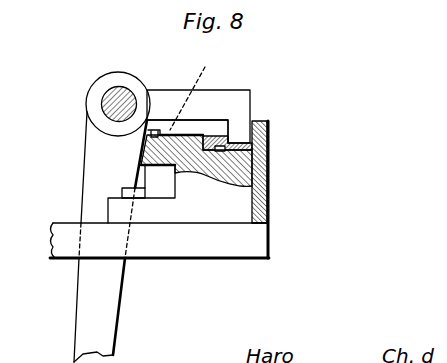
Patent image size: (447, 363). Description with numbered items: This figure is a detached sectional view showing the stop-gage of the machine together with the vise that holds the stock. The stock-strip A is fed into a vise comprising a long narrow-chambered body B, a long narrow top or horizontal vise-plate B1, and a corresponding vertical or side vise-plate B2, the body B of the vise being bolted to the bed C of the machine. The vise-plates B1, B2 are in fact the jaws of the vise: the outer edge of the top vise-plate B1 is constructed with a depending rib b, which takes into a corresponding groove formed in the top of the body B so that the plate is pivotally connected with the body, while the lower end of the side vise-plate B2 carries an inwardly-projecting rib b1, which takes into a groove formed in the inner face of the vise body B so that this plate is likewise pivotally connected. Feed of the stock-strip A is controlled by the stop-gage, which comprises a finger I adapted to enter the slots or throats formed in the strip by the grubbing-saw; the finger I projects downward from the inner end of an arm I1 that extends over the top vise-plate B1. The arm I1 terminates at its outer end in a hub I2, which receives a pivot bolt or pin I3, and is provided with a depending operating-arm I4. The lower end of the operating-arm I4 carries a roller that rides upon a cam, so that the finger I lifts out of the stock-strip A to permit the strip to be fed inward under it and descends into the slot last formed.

The finger I is at (237, 124).
The arm I1 is at (187, 119).
The hub I2 is at (127, 74).
The pivot bolt or pin I3 is at (102, 103).
The depending operating-arm I4 is at (110, 237).
The stock-strip A is at (266, 123).
The vise body B is at (196, 162).
The top vise-plate B1 is at (187, 98).
The side vise-plate B2 is at (268, 187).
The depending rib b is at (147, 132).
The inwardly-projecting rib b1 is at (268, 215).
The bed C is at (159, 240).